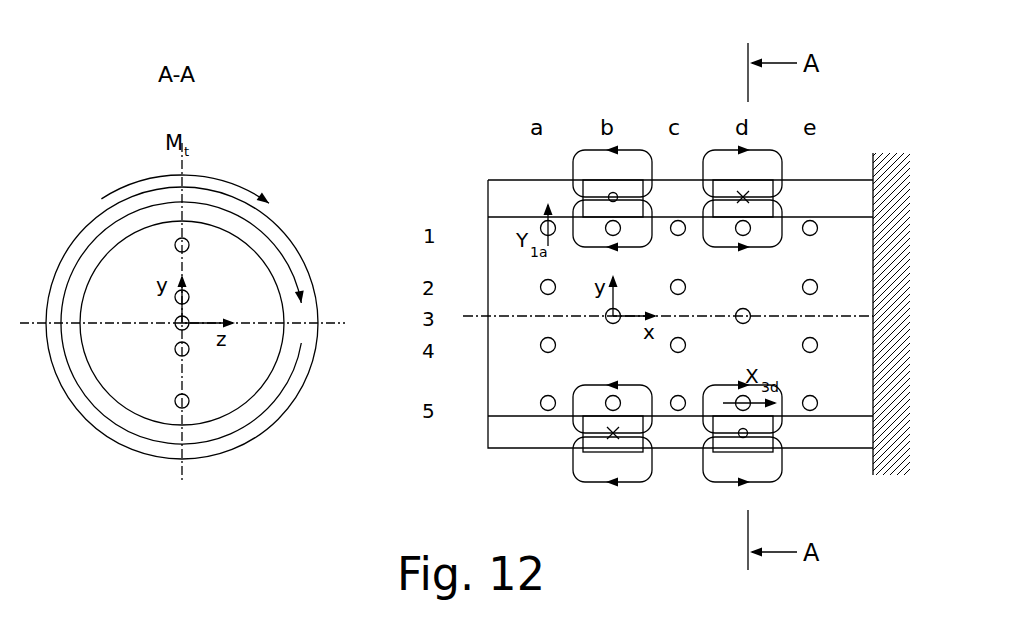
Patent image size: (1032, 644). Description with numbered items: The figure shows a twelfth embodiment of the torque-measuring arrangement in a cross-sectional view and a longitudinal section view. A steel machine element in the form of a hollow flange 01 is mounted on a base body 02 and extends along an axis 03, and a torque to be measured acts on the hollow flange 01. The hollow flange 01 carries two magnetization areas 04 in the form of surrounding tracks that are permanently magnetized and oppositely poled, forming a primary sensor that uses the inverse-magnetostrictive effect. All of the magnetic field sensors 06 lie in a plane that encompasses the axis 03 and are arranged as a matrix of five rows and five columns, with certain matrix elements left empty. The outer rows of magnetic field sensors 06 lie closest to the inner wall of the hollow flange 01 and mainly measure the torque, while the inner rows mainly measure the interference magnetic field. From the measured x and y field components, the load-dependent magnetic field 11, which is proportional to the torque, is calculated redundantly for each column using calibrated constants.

The hollow flange 01 is at (277, 228).
The base body 02 is at (888, 177).
The axis 03 is at (478, 317).
The magnetization areas 04 is at (293, 276).
The magnetic field sensors 06 is at (175, 324).
The load-dependent magnetic field 11 is at (713, 480).